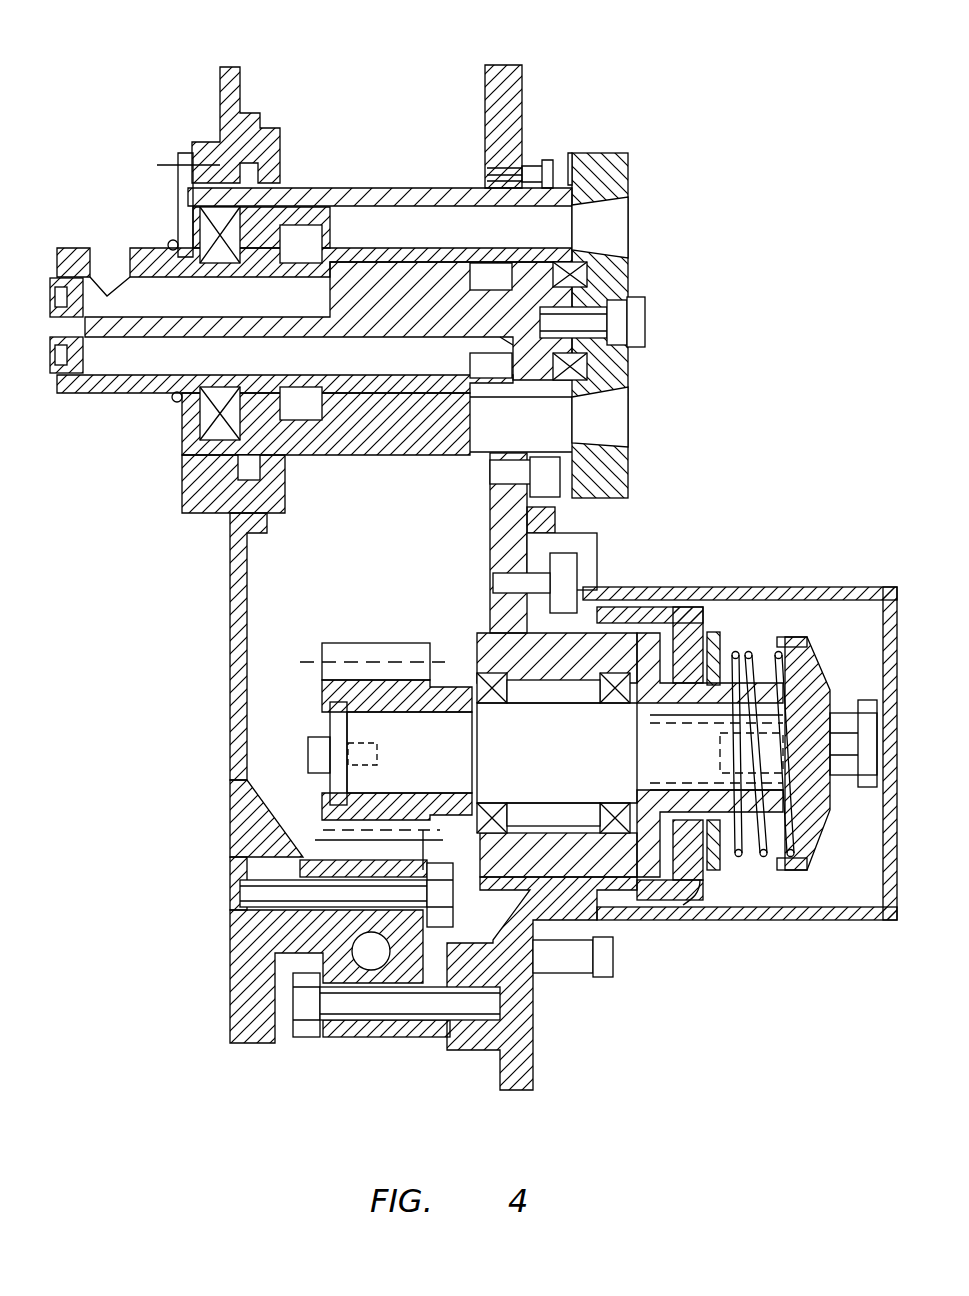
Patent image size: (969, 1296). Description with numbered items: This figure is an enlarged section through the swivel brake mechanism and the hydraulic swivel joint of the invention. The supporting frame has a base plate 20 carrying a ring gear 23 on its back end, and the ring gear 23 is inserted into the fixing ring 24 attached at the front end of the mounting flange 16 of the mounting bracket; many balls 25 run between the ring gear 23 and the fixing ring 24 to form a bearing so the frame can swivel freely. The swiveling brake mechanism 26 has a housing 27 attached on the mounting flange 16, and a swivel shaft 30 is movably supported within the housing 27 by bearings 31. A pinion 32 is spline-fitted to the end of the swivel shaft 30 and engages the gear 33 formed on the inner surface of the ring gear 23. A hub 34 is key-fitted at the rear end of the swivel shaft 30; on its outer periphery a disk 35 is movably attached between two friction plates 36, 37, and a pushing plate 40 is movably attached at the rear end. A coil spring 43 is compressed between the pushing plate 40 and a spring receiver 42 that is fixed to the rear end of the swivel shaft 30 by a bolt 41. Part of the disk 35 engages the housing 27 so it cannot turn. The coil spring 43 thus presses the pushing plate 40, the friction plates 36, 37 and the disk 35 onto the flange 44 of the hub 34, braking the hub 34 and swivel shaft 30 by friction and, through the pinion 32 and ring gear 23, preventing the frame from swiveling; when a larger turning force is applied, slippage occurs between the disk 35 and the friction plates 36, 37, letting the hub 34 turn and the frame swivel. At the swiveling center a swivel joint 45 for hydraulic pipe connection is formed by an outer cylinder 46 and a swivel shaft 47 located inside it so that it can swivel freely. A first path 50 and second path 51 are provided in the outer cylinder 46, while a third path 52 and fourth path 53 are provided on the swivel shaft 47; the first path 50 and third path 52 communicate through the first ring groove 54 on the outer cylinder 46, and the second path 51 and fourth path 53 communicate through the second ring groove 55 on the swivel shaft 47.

The mounting flange 16 is at (492, 68).
The base plate 20 is at (232, 645).
The ring gear 23 is at (330, 870).
The fixing ring 24 is at (370, 1025).
The balls 25 is at (368, 952).
The swiveling brake mechanism 26 is at (728, 560).
The housing 27 is at (487, 650).
The swivel shaft 30 is at (377, 755).
The bearings 31 is at (496, 705).
The pinion 32 is at (370, 652).
The gear 33 is at (352, 850).
The hub 34 is at (695, 810).
The disk 35 is at (676, 630).
The friction plate 36 is at (678, 620).
The friction plate 37 is at (722, 640).
The pushing plate 40 is at (745, 870).
The bolt 41 is at (855, 735).
The spring receiver 42 is at (815, 850).
The coil spring 43 is at (778, 872).
The flange 44 is at (698, 885).
The swivel joint 45 is at (140, 180).
The outer cylinder 46 is at (426, 190).
The swivel shaft 47 is at (90, 400).
The first path 50 is at (552, 215).
The second path 51 is at (550, 423).
The third path 52 is at (107, 300).
The fourth path 53 is at (157, 372).
The first ring groove 54 is at (300, 240).
The second ring groove 55 is at (490, 372).